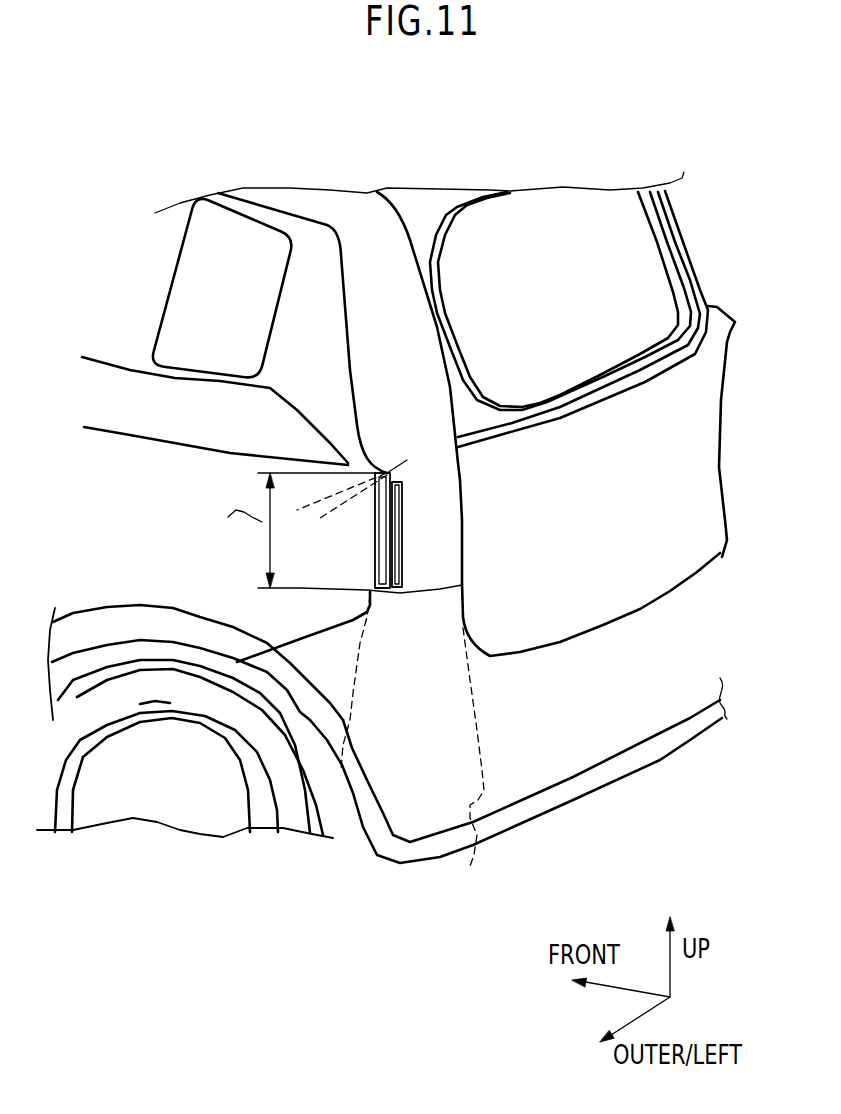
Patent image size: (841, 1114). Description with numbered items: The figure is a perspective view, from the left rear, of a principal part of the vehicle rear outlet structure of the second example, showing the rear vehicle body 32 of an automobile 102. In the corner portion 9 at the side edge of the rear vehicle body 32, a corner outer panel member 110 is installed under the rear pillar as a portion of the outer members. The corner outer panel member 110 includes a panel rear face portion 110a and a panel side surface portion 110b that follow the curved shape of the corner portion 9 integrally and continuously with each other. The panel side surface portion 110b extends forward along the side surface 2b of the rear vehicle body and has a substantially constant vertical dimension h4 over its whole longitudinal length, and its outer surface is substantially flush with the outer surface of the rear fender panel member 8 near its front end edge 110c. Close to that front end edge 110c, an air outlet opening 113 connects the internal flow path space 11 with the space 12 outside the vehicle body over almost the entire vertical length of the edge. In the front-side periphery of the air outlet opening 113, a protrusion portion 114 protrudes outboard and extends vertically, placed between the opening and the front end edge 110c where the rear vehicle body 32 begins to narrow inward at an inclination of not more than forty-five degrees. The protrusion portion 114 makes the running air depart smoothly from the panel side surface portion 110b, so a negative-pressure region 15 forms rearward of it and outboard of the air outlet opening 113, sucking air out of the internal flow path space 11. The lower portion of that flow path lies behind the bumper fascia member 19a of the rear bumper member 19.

The automobile 102 is at (186, 124).
The rear vehicle body 32 is at (419, 167).
The corner outer panel member 110 is at (409, 304).
The side surface 2b is at (198, 562).
The rear fender panel member 8 is at (185, 738).
The space outside of the vehicle body 12 is at (779, 507).
The air outlet opening 113 is at (602, 568).
The negative-pressure region 15 is at (503, 604).
The rear bumper member 19 is at (532, 770).
The bumper fascia member 19a is at (531, 771).
The panel rear face portion 110a is at (528, 673).
The protrusion portion 114 is at (310, 699).
The front end edge 110c is at (306, 736).
The panel side surface portion 110b is at (345, 768).
The corner portion 9 is at (360, 749).
The internal flow path space 11 is at (469, 761).
The vertical dimension h4 is at (291, 530).